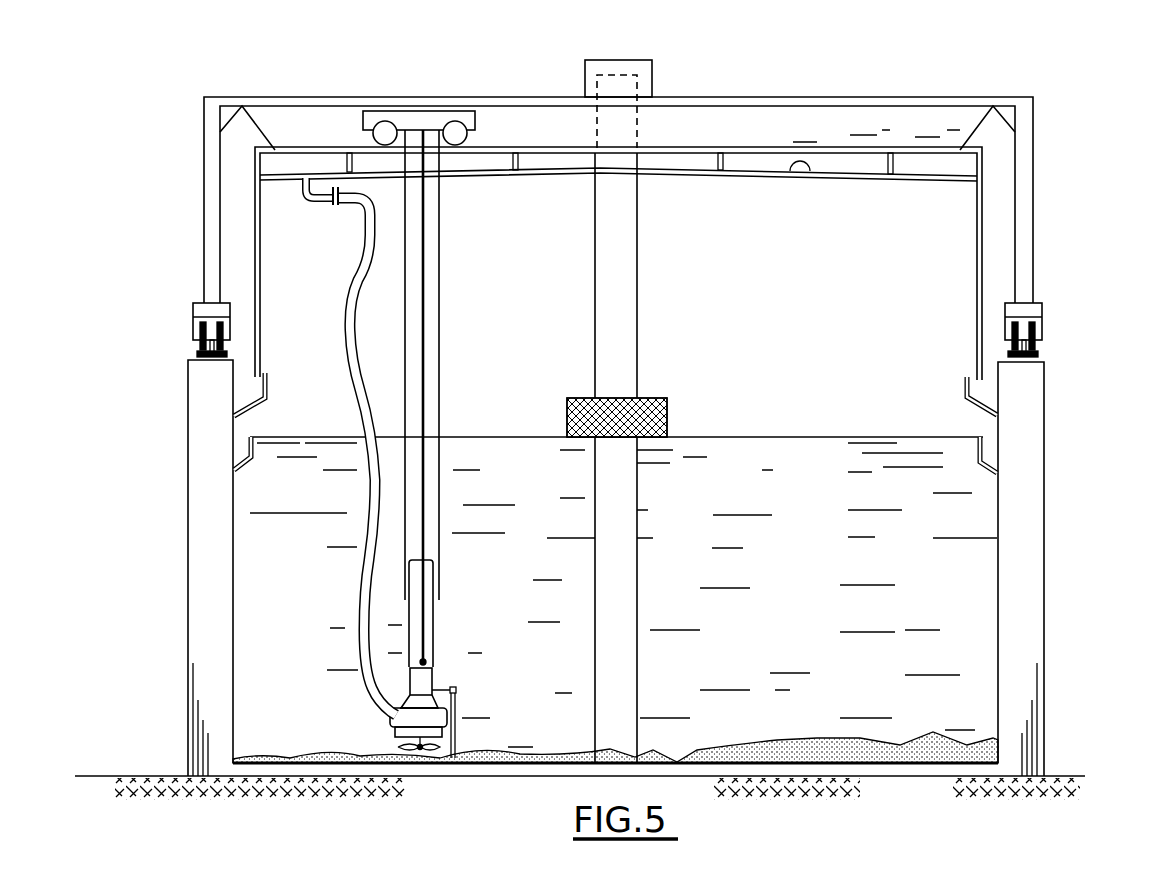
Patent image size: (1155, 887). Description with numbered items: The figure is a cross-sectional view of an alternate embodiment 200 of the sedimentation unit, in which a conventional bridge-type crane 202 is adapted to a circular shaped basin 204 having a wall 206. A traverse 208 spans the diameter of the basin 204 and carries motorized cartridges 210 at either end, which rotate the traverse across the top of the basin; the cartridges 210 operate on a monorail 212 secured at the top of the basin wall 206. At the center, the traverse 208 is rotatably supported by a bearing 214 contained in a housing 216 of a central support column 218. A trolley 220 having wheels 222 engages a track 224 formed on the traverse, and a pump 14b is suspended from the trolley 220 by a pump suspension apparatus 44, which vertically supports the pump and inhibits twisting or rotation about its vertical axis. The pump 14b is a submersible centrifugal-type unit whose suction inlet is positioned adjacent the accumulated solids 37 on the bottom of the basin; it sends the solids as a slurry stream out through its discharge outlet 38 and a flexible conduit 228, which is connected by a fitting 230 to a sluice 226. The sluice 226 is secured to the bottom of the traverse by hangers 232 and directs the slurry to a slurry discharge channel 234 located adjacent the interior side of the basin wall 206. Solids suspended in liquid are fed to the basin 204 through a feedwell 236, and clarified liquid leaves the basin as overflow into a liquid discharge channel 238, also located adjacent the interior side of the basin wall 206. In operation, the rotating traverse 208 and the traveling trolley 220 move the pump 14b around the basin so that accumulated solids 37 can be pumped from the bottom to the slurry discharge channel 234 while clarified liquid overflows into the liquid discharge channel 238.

The alternate embodiment 200 is at (165, 672).
The bridge-type crane 202 is at (618, 164).
The basin 204 is at (1044, 547).
The basin wall 206 is at (1022, 472).
The traverse 208 is at (853, 97).
The motorized cartridges 210 is at (205, 312).
The monorail 212 is at (213, 360).
The bearing 214 is at (627, 73).
The housing 216 is at (607, 57).
The central support column 218 is at (627, 338).
The trolley 220 is at (407, 112).
The wheels 222 is at (382, 130).
The track 224 is at (740, 148).
The sluice 226 is at (790, 163).
The flexible conduit 228 is at (337, 453).
The fitting 230 is at (333, 205).
The hangers 232 is at (343, 167).
The slurry discharge channel 234 is at (265, 400).
The feedwell 236 is at (667, 407).
The liquid discharge channel 238 is at (257, 457).
The accumulated solids 37 is at (830, 742).
The discharge outlet 38 is at (382, 715).
The pump 14b is at (423, 685).
The pump suspension apparatus 44 is at (430, 355).